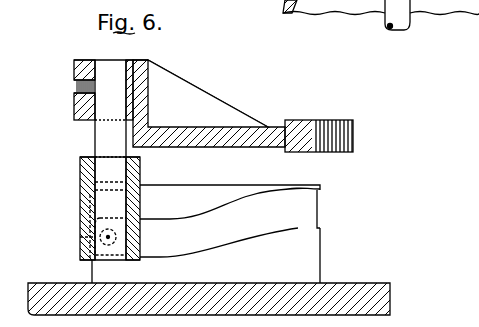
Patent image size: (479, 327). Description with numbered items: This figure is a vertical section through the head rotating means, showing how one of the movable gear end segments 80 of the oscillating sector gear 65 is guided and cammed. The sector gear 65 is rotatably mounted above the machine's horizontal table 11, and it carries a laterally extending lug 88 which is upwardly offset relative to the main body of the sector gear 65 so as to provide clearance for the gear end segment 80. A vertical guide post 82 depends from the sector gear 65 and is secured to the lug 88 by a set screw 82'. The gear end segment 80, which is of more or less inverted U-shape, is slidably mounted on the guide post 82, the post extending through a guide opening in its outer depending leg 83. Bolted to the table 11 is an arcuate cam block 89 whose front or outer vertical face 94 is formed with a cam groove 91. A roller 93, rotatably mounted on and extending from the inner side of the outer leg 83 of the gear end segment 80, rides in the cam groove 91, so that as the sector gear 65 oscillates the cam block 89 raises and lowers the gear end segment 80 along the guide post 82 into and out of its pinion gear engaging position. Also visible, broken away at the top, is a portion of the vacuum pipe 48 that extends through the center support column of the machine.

The horizontal table 11 is at (360, 285).
The pipe 48 is at (410, 20).
The oscillating sector gear 65 is at (275, 127).
The gear end segment 80 is at (80, 172).
The vertical guide post 82 is at (86, 160).
The set screw 82' is at (66, 78).
The outer depending leg 83 is at (82, 239).
The laterally extending lug 88 is at (77, 106).
The cam block 89 is at (225, 185).
The cam groove 91 is at (298, 228).
The roller 93 is at (82, 210).
The outer vertical face 94 is at (313, 248).